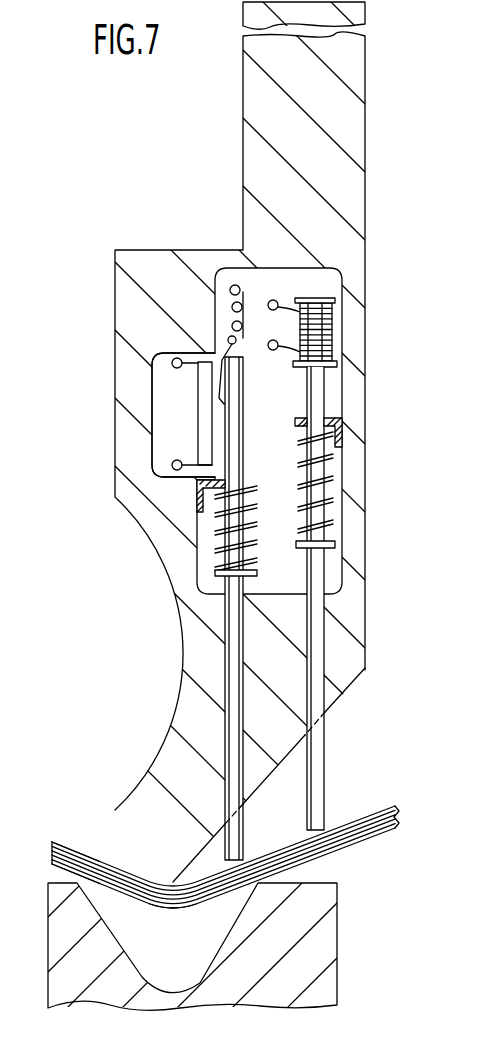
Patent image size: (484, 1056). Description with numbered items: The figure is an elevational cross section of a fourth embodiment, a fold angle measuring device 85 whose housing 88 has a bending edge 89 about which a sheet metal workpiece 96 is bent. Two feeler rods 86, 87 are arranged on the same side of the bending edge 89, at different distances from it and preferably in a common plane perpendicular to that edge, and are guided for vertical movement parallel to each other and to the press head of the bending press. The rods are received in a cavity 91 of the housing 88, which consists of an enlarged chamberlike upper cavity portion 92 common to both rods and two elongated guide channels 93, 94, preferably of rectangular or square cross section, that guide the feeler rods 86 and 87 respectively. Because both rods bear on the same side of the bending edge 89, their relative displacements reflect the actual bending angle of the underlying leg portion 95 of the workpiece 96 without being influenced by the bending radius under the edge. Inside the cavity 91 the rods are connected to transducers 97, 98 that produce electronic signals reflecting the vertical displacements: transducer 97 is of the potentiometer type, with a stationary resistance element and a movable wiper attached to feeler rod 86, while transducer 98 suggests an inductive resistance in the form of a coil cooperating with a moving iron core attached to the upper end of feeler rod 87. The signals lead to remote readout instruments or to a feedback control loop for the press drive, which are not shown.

The fold angle measuring device 85 is at (166, 157).
The feeler rod 86 is at (245, 814).
The feeler rod 87 is at (318, 748).
The housing 88 is at (368, 620).
The bending edge 89 is at (175, 914).
The cavity 91 is at (279, 284).
The upper cavity portion 92 is at (274, 393).
The guide channel 93 is at (229, 681).
The guide channel 94 is at (318, 668).
The leg portion 95 is at (378, 832).
The sheet metal workpiece 96 is at (66, 838).
The transducer 97 is at (184, 400).
The transducer 98 is at (338, 324).